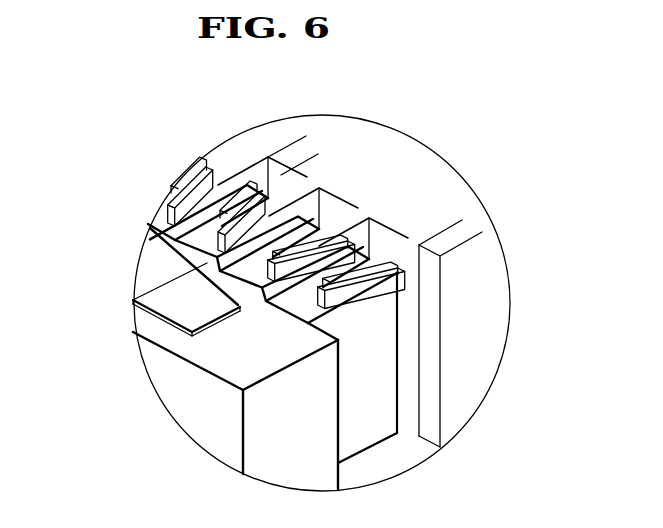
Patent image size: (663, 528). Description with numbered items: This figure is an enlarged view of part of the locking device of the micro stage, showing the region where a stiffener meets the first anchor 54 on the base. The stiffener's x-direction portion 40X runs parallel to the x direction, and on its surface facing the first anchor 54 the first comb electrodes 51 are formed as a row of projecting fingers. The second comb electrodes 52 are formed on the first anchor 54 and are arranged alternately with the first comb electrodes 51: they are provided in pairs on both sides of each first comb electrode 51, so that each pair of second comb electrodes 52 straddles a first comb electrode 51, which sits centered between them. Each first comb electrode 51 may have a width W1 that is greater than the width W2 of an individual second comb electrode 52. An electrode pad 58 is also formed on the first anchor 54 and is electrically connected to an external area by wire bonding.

The x-direction portion 40X is at (397, 195).
The second comb electrodes 52 is at (340, 242).
The first anchor 54 is at (205, 357).
The first comb electrodes 51 is at (255, 247).
The electrode pad 58 is at (160, 283).
The width of first comb electrode W1 is at (490, 245).
The width of second comb electrode W2 is at (275, 138).